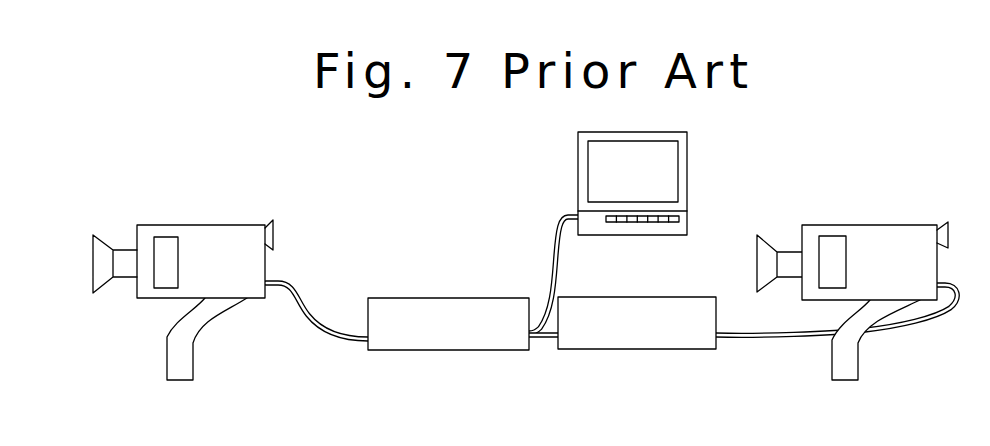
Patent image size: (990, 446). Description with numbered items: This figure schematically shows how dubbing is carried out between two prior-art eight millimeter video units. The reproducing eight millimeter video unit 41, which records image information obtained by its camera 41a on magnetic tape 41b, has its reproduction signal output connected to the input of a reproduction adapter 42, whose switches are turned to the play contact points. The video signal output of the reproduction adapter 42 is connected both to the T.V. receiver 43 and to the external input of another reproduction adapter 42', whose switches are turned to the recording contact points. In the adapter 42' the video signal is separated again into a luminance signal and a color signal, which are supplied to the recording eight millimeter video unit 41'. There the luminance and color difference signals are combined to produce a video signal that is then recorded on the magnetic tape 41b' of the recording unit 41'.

The 8 mm video unit 41 is at (205, 275).
The camera 41a is at (125, 258).
The magnetic tape 41b is at (138, 299).
The reproduction adapter 42 is at (448, 302).
The reproduction adapter 42' is at (637, 301).
The T.V. receiver 43 is at (600, 177).
The 8 mm video unit 41' is at (875, 273).
The magnetic tape 41b' is at (801, 303).